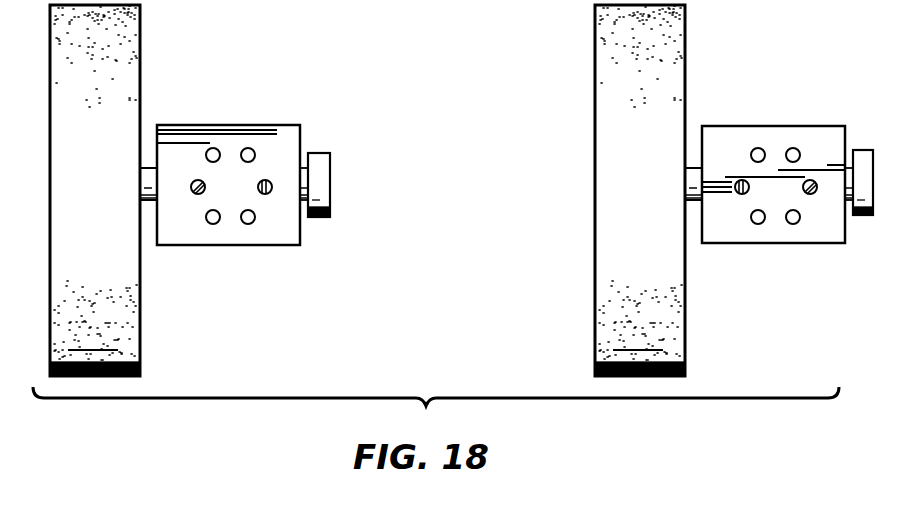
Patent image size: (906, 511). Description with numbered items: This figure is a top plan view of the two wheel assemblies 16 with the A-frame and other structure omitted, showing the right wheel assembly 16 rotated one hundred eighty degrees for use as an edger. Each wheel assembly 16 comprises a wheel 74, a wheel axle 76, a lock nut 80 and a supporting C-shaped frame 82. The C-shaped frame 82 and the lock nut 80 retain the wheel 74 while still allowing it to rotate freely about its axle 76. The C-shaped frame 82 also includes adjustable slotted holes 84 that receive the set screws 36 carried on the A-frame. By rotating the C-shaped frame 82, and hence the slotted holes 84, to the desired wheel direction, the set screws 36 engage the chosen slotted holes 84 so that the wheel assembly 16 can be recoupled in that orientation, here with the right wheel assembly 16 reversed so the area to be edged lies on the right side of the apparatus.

The wheel assembly 16 is at (206, 296).
The set screws 36 is at (262, 187).
The wheel 74 is at (136, 35).
The wheel axle 76 is at (151, 178).
The lock nut 80 is at (324, 192).
The C-shaped frame 82 is at (293, 145).
The slotted holes 84 is at (247, 150).